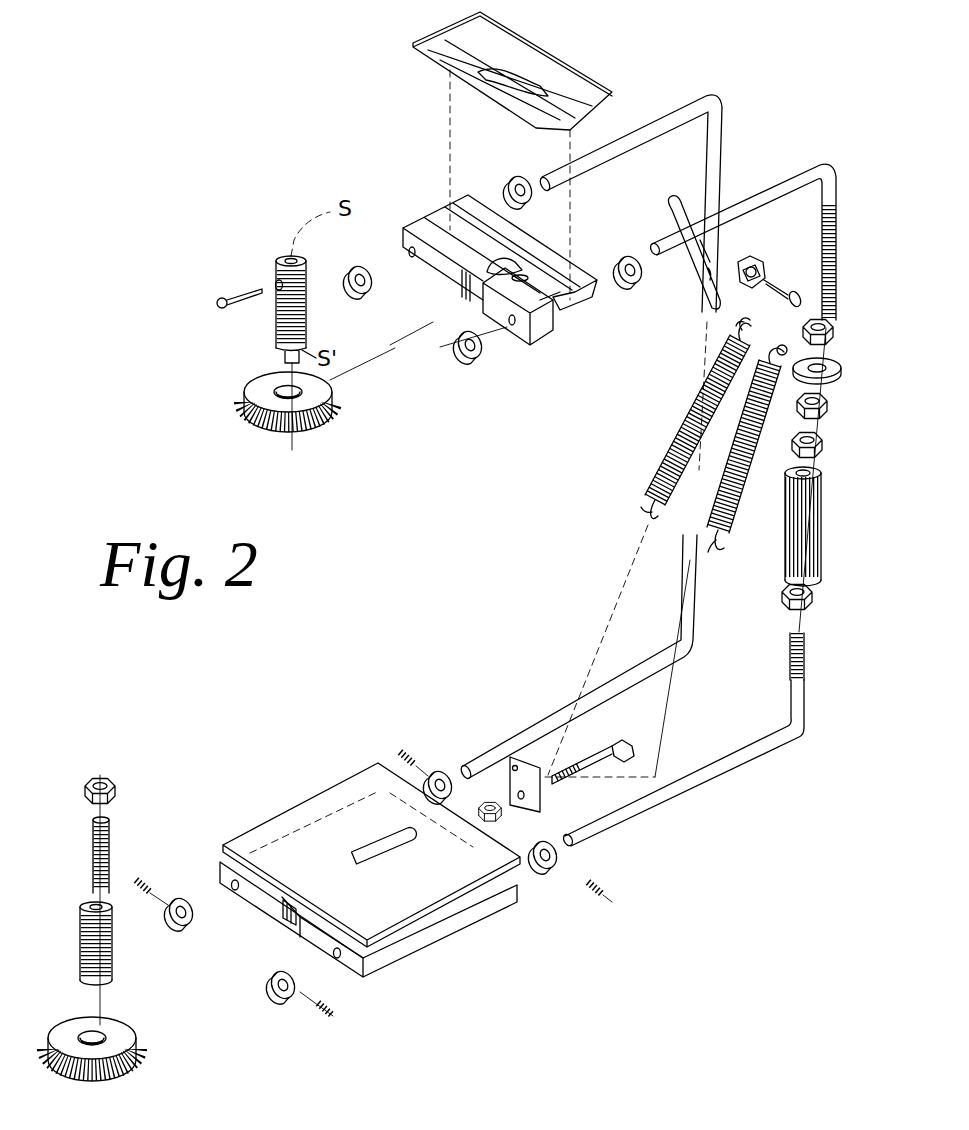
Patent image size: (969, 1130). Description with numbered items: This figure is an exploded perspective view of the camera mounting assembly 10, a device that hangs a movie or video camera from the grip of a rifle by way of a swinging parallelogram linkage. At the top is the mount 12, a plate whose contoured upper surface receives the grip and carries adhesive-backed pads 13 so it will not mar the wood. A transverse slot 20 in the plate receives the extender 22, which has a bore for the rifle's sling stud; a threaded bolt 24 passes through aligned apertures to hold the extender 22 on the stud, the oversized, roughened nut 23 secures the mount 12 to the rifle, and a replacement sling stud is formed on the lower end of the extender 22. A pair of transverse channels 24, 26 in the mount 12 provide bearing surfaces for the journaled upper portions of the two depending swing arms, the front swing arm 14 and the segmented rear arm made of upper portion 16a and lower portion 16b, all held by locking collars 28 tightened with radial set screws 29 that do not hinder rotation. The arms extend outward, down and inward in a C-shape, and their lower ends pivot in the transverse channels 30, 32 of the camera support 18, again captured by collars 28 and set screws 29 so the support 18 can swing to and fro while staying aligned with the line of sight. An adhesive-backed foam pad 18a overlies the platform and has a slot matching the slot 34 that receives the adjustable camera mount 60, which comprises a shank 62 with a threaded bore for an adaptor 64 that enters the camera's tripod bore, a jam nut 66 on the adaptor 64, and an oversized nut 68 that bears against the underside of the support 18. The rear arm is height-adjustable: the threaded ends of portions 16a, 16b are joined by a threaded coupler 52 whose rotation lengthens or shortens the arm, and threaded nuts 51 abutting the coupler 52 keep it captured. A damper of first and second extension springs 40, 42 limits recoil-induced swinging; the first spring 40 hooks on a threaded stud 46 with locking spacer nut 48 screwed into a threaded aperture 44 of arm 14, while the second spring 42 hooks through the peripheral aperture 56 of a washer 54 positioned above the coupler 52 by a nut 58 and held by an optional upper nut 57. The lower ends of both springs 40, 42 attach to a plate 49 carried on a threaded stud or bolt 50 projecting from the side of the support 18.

The mounting assembly 10 is at (711, 886).
The mount 12 is at (432, 222).
The adhesive-backed pads 13 is at (548, 62).
The swing arm 14 is at (722, 110).
The upper portion of swing arm 16a is at (806, 178).
The lower portion of swing arm 16b is at (773, 748).
The support 18 is at (387, 885).
The adhesive-backed foam pad 18a is at (440, 890).
The transverse slot 20 is at (446, 330).
The extender 22 is at (278, 325).
The nut 23 is at (333, 415).
The threaded bolt / transverse channel 24 is at (236, 305).
The transverse channel 26 is at (410, 260).
The locking collars 28 is at (513, 182).
The radial set screws 29 is at (402, 748).
The transverse channel 30 is at (338, 959).
The transverse channel 32 is at (232, 892).
The slot 34 is at (290, 908).
The first extension spring 40 is at (690, 425).
The second extension spring 42 is at (742, 486).
The threaded apertures 44 is at (700, 240).
The threaded stud 46 is at (793, 290).
The locking spacer nut 48 is at (760, 262).
The plate 49 is at (513, 760).
The threaded stud or bolt 50 is at (630, 743).
The threaded collars or nuts 51 is at (804, 533).
The coupler 52 is at (792, 556).
The washer 54 is at (836, 325).
The peripheral aperture 56 is at (778, 350).
The upper nut 57 is at (738, 328).
The nut 58 is at (828, 408).
The adjustable mount 60 is at (130, 881).
The shank 62 is at (114, 948).
The adaptor 64 is at (112, 836).
The jam nut 66 is at (100, 772).
The nut 68 is at (136, 1055).